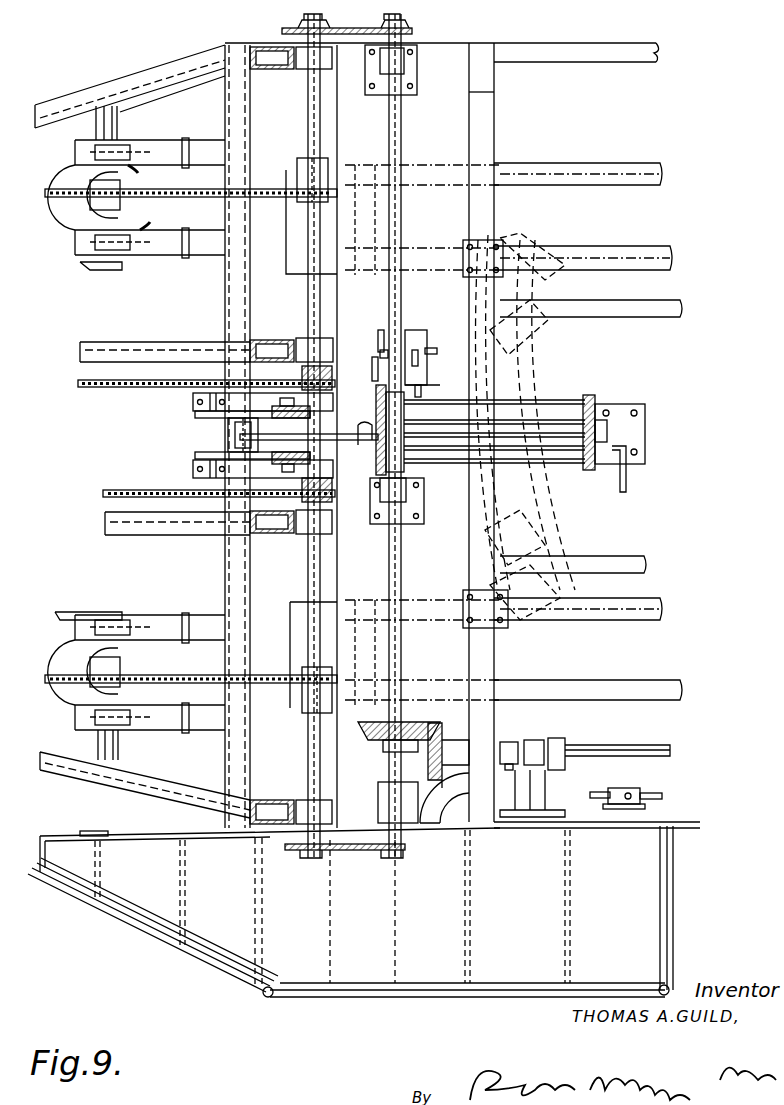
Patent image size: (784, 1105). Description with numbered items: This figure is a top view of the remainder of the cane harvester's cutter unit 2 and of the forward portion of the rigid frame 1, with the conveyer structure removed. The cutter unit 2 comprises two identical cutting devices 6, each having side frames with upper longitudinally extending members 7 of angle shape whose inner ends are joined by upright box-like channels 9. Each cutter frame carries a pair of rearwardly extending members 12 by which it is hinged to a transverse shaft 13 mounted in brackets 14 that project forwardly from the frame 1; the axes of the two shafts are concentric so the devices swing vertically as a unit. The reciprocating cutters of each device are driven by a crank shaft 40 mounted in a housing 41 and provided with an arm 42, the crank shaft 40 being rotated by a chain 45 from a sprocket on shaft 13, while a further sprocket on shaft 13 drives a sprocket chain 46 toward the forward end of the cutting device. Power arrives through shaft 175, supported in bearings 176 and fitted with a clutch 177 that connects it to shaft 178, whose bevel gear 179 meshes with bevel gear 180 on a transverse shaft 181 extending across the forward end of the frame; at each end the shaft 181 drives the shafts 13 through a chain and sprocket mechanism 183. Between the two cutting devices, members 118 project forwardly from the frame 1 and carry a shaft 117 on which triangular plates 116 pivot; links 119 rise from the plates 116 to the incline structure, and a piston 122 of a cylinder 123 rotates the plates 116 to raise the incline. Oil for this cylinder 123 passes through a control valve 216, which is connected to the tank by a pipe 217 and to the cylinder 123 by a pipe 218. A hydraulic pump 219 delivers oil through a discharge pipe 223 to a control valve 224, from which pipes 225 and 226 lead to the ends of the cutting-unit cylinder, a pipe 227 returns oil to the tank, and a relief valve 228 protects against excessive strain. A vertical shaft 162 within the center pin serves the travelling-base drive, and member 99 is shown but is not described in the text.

The rigid frame 1 is at (585, 58).
The cutter unit 2 is at (120, 90).
The cutting devices 6 is at (143, 352).
The upper longitudinally extending members 7 is at (48, 113).
The upright box-like channels 9 is at (268, 52).
The rearwardly extending members 12 is at (300, 65).
The transverse shaft 13 is at (310, 250).
The brackets 14 is at (325, 80).
The crank shaft 40 is at (118, 125).
The housing 41 is at (75, 215).
The arm 42 is at (85, 268).
The chain 45 is at (215, 196).
The sprocket chain 46 is at (297, 186).
The column 99 is at (250, 143).
The triangularly shaped plates 116 is at (195, 415).
The shaft 117 is at (228, 436).
The members 118 is at (308, 408).
The links 119 is at (258, 483).
The piston 122 is at (345, 430).
The cylinder 123 is at (540, 410).
The vertical shaft 162 is at (406, 85).
The shaft 175 is at (640, 748).
The bearings 176 is at (565, 745).
The clutch 177 is at (535, 742).
The shaft 178 is at (505, 745).
The bevel gear 179 is at (442, 735).
The bevel gear 180 is at (400, 725).
The shaft 181 is at (401, 538).
The chain and sprocket mechanism 183 is at (413, 31).
The control valve 216 is at (632, 809).
The pipe 217 is at (632, 792).
The pipe 218 is at (620, 490).
The hydraulic pump 219 is at (662, 796).
The discharge pipe 223 is at (430, 350).
The control valve 224 is at (420, 330).
The pipe 225 is at (383, 365).
The pipe 226 is at (378, 340).
The pipe 227 is at (420, 360).
The relief valve 228 is at (372, 370).